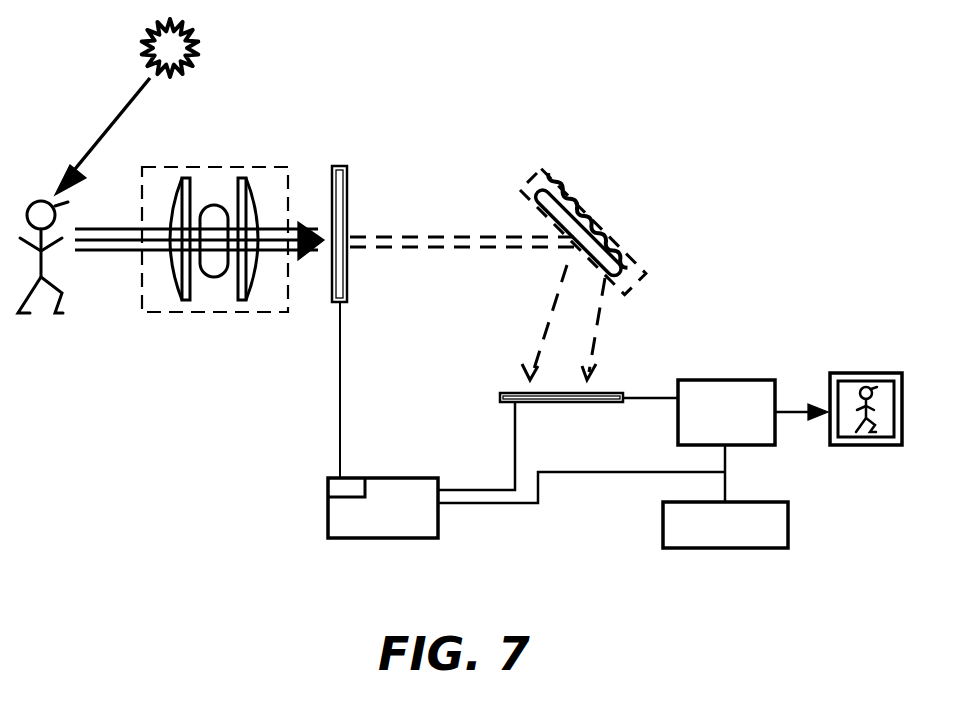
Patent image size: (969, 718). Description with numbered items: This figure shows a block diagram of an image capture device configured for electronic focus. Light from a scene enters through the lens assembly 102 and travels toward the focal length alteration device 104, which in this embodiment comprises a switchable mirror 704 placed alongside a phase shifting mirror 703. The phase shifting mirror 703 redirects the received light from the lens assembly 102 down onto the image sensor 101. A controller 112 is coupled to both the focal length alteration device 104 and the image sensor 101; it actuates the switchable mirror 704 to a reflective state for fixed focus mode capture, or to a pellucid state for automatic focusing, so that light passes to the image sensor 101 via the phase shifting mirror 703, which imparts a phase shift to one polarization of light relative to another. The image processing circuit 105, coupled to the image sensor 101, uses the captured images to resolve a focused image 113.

The image sensor 101 is at (557, 402).
The lens assembly 102 is at (213, 312).
The focal length alteration device 104 is at (613, 283).
The image processing circuit 105 is at (718, 380).
The controller 112 is at (397, 478).
The focused image 113 is at (853, 373).
The phase shifting mirror 703 is at (587, 212).
The switchable mirror 704 is at (545, 212).